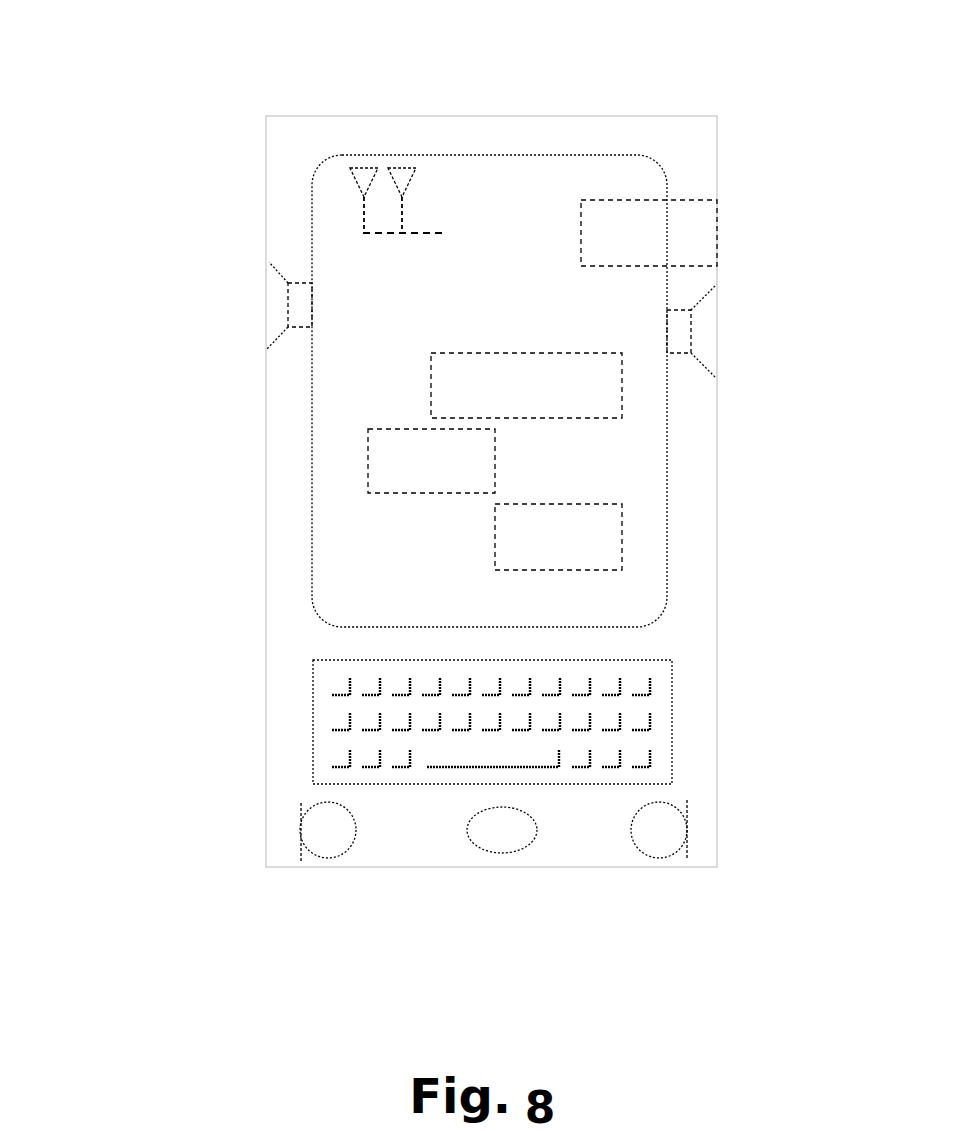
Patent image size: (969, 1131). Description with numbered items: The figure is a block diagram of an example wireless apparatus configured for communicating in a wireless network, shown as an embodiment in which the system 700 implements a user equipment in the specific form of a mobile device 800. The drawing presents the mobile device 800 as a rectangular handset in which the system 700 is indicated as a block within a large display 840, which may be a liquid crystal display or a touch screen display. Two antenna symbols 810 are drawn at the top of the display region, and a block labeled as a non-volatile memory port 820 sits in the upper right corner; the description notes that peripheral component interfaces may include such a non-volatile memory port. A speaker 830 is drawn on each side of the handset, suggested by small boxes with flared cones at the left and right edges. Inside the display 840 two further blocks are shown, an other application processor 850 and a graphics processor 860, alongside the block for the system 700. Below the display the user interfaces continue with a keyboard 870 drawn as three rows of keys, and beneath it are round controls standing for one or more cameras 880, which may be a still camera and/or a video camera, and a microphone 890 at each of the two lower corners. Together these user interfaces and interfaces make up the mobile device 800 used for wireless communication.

The mobile device 800 is at (182, 60).
The antennas 810 is at (366, 168).
The non-volatile memory port 820 is at (717, 220).
The speaker 830 is at (265, 310).
The display 840 is at (667, 550).
The other application processor 850 is at (560, 418).
The graphics processor 860 is at (408, 493).
The system 700 is at (558, 537).
The keyboard 870 is at (635, 660).
The cameras 880 is at (475, 847).
The microphone 890 is at (320, 858).